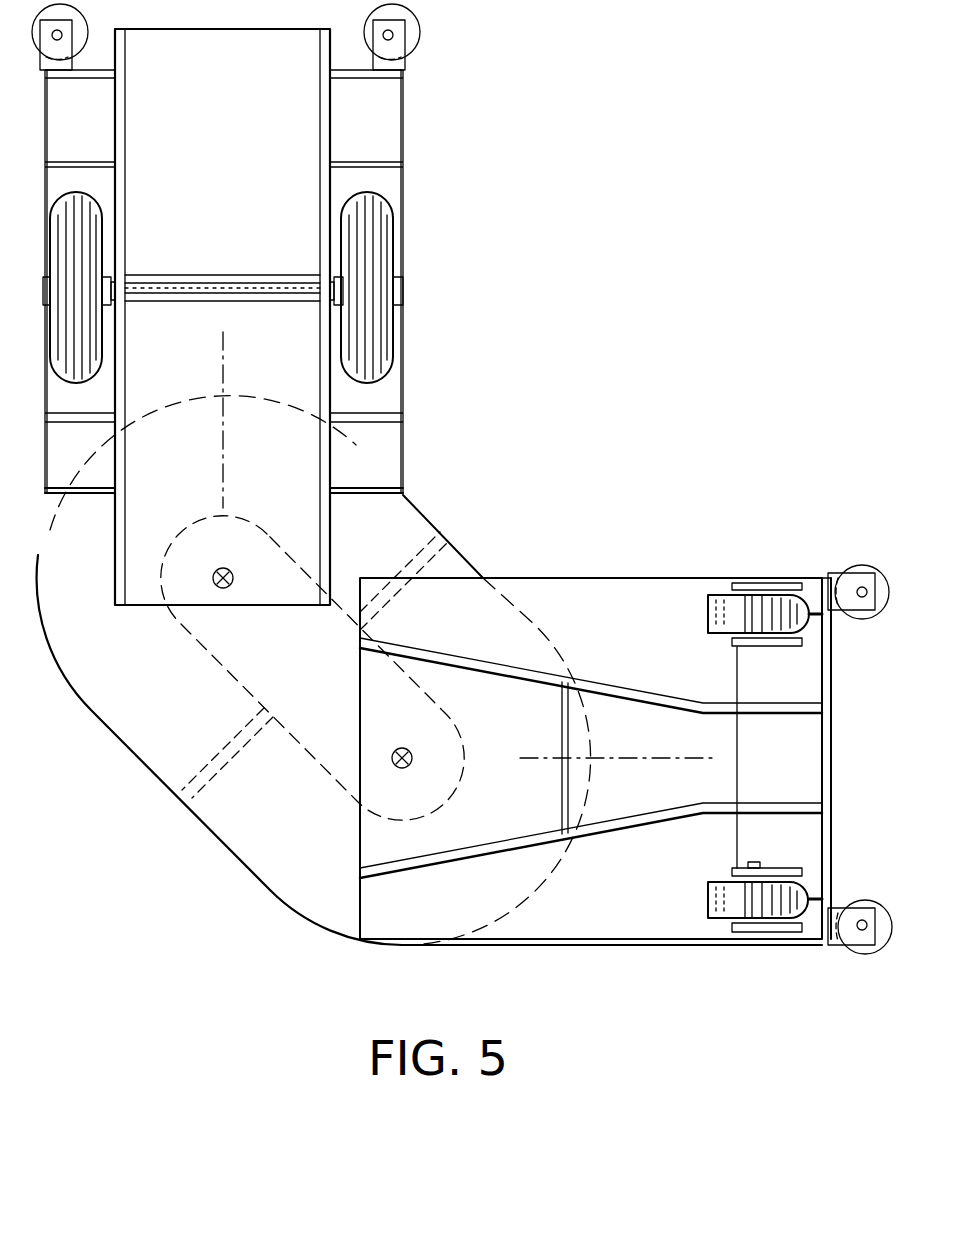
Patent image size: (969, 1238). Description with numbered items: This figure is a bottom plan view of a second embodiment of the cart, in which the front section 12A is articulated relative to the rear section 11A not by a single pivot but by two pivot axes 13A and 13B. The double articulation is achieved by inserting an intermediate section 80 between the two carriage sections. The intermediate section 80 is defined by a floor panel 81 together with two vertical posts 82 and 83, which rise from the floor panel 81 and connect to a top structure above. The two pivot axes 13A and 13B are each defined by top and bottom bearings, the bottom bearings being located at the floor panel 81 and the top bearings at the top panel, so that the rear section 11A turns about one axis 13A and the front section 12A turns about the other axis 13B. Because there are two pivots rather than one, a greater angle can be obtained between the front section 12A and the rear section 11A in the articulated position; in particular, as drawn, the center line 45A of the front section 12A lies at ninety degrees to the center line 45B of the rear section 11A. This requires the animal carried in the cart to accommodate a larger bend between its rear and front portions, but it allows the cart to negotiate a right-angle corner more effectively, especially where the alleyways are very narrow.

The rear section 11A is at (470, 247).
The front section 12A is at (700, 543).
The pivot axis 13A is at (228, 583).
The pivot axis 13B is at (405, 767).
The center line of the front section 45A is at (615, 757).
The center line of the rear section 45B is at (222, 442).
The intermediate section 80 is at (447, 523).
The floor panel 81 is at (257, 821).
The vertical post 82 is at (445, 556).
The vertical post 83 is at (192, 790).